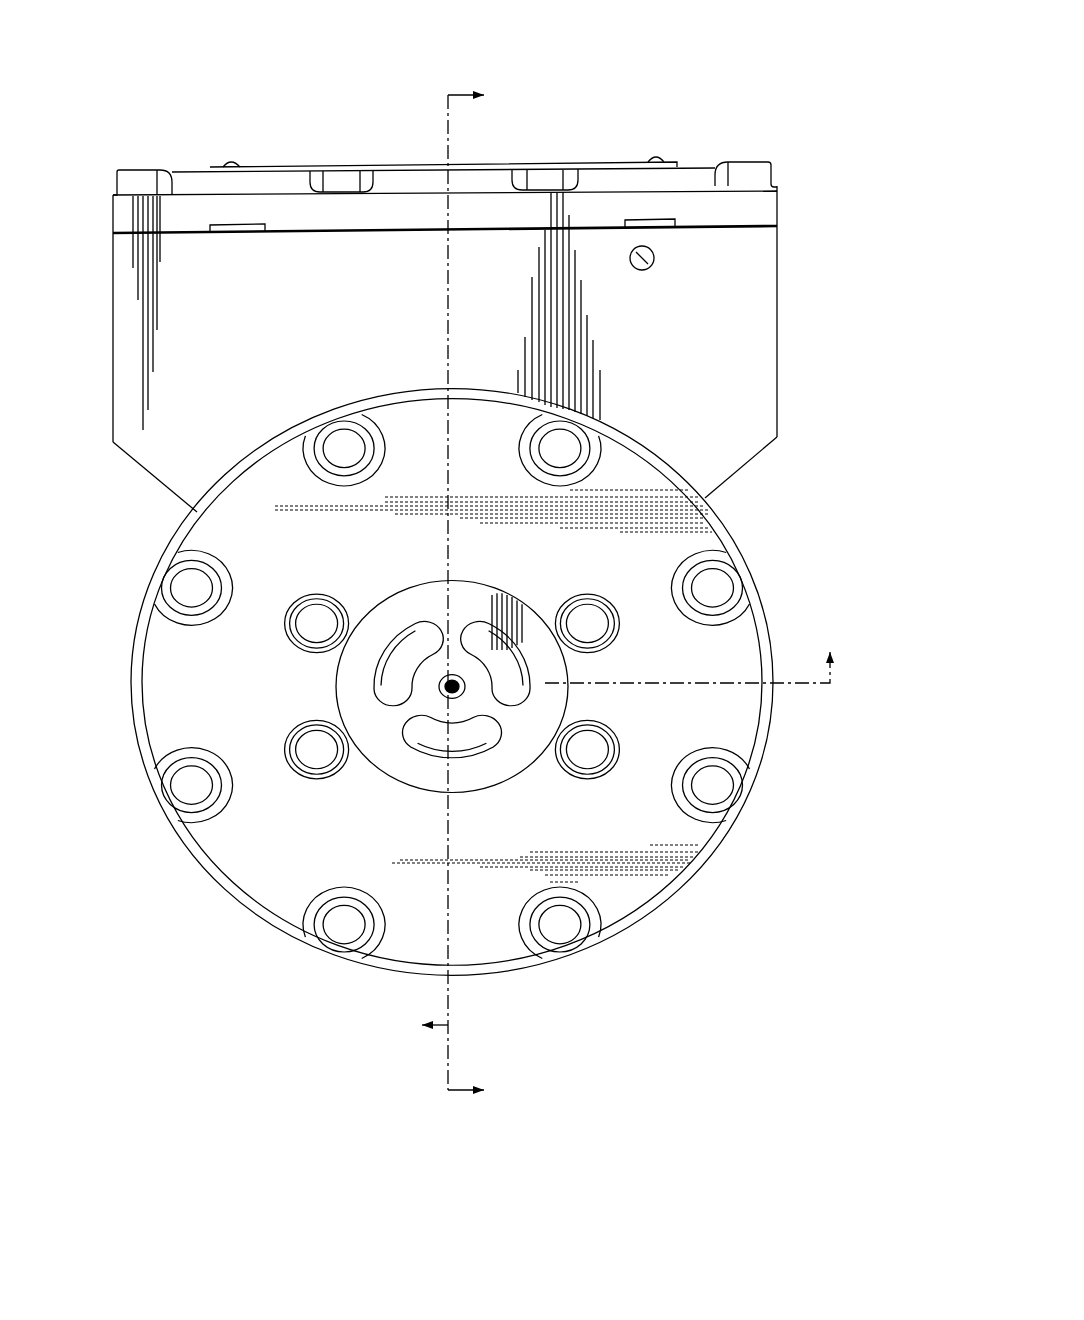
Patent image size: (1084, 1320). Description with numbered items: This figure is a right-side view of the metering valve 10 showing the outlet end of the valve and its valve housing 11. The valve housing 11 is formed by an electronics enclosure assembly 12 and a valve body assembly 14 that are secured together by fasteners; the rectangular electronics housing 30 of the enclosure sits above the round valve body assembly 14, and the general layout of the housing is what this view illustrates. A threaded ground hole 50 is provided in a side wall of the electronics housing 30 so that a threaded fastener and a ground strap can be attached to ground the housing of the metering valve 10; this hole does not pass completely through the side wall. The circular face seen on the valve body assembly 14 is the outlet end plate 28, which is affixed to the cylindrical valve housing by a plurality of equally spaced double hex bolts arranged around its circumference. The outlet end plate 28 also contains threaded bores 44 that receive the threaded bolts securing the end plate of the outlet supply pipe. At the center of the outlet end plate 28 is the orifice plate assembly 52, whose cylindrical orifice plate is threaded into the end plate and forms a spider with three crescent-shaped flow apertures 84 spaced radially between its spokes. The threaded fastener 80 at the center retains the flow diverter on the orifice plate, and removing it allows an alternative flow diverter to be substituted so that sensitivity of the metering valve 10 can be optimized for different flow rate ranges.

The metering valve 10 is at (617, 108).
The valve housing 11 is at (769, 481).
The electronics enclosure assembly 12 is at (799, 258).
The valve body assembly 14 is at (791, 747).
The outlet end plate 28 is at (298, 863).
The electronics housing 30 is at (333, 351).
The threaded bores 44 is at (315, 594).
The threaded ground hole 50 is at (645, 271).
The orifice plate assembly 52 is at (466, 600).
The threaded fastener 80 is at (440, 700).
The flow apertures 84 is at (403, 640).